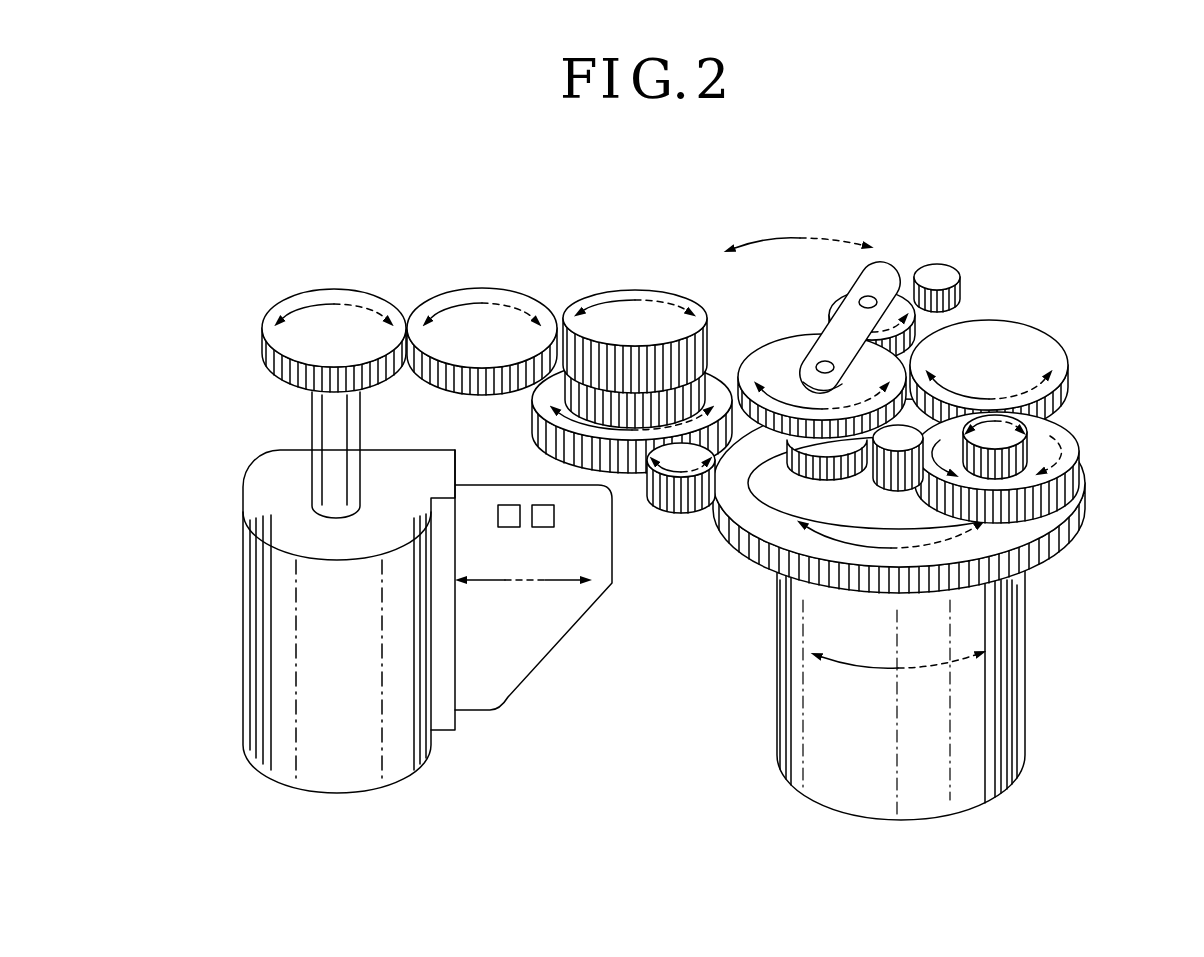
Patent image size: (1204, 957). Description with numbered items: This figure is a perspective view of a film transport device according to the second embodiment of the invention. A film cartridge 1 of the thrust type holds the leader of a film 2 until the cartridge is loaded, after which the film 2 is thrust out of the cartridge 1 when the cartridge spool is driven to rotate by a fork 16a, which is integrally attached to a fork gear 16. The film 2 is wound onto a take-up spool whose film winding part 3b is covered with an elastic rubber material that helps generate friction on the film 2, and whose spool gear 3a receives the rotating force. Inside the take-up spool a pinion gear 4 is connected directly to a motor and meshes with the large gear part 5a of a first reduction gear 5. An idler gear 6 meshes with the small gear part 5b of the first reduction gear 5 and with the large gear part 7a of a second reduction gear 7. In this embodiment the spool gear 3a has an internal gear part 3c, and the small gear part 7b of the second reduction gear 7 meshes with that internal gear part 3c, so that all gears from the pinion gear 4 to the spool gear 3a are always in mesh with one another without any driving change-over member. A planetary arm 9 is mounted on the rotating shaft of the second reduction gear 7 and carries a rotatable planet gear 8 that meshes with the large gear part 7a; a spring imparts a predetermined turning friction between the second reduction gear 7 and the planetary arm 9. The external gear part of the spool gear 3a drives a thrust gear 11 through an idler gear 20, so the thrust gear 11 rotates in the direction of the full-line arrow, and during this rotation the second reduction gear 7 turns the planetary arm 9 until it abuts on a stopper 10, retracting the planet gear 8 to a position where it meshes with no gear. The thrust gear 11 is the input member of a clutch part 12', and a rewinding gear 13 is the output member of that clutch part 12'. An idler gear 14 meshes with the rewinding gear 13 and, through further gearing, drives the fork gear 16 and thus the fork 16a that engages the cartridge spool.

The film cartridge 1 is at (318, 768).
The film 2 is at (493, 688).
The spool gear 3a is at (1050, 545).
The film winding part 3b is at (1016, 718).
The internal gear part 3c is at (783, 440).
The pinion gear 4 is at (896, 442).
The first reduction gear 5 is at (1063, 455).
The large gear part 5a is at (1042, 508).
The small gear part 5b is at (1000, 438).
The idler gear 6 is at (1030, 352).
The second reduction gear 7 is at (794, 345).
The large gear part 7a is at (740, 404).
The small gear part 7b is at (820, 473).
The planet gear 8 is at (855, 293).
The planetary arm 9 is at (905, 275).
The stopper 10 is at (942, 278).
The thrust gear 11 is at (545, 394).
The clutch part 12' is at (635, 322).
The rewinding gear 13 is at (570, 325).
The idler gear 14 is at (487, 320).
The fork gear 16 is at (278, 330).
The fork 16a is at (322, 426).
The idler gear 20 is at (673, 505).